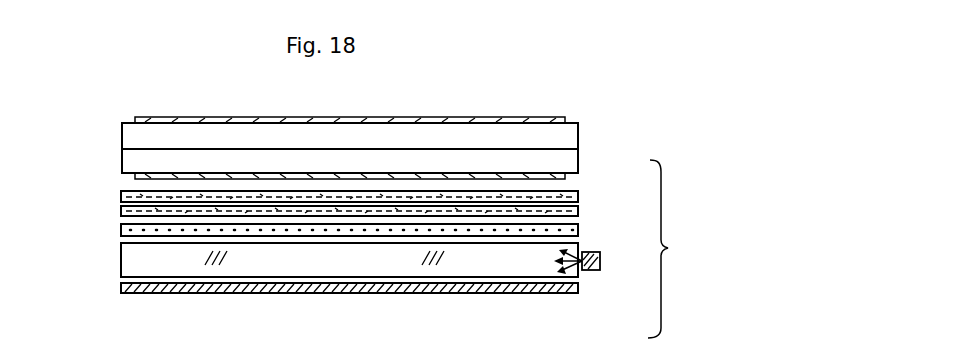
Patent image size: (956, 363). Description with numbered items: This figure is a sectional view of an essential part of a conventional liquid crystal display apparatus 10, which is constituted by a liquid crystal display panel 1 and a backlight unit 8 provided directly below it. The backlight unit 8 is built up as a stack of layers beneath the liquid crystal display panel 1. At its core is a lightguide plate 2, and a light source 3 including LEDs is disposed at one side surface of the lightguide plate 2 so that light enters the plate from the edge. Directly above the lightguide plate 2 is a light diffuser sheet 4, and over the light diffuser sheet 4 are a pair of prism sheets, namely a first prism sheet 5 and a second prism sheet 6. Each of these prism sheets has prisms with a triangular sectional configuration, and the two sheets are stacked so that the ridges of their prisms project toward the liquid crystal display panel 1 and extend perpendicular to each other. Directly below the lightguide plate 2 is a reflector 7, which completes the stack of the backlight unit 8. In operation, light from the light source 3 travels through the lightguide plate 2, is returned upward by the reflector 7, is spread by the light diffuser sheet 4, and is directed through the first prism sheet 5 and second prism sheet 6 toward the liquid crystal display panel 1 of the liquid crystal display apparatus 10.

The liquid crystal display panel 1 is at (346, 138).
The lightguide plate 2 is at (527, 263).
The light source 3 is at (602, 261).
The light diffuser sheet 4 is at (565, 229).
The first prism sheet 5 is at (562, 213).
The second prism sheet 6 is at (560, 197).
The reflector 7 is at (547, 293).
The backlight unit 8 is at (666, 249).
The liquid crystal display apparatus 10 is at (622, 116).